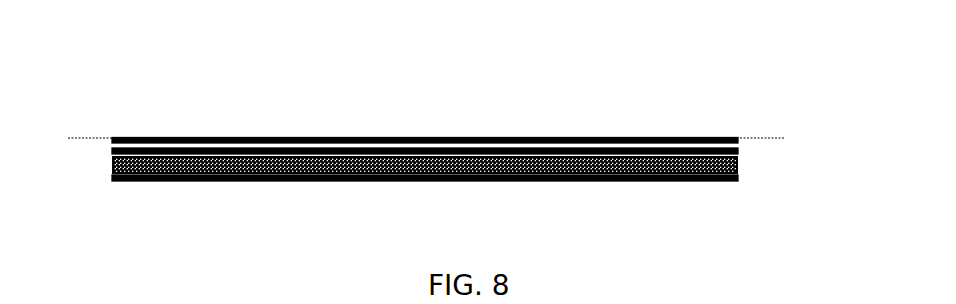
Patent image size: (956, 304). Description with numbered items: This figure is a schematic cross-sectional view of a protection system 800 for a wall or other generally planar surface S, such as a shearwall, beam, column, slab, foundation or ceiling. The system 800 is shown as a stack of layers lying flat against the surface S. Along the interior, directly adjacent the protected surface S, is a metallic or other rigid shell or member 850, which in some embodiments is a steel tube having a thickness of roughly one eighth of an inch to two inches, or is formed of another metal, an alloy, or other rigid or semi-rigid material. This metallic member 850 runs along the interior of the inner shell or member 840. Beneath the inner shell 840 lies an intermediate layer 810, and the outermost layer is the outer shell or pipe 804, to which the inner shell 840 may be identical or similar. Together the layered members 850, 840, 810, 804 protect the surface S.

The protection system 800 is at (443, 109).
The metallic shell or member 850 is at (229, 138).
The inner shell or member 840 is at (297, 148).
The core layer 810 is at (338, 163).
The outer shell or pipe 804 is at (405, 175).
The wall or other generally planar surface S is at (83, 139).